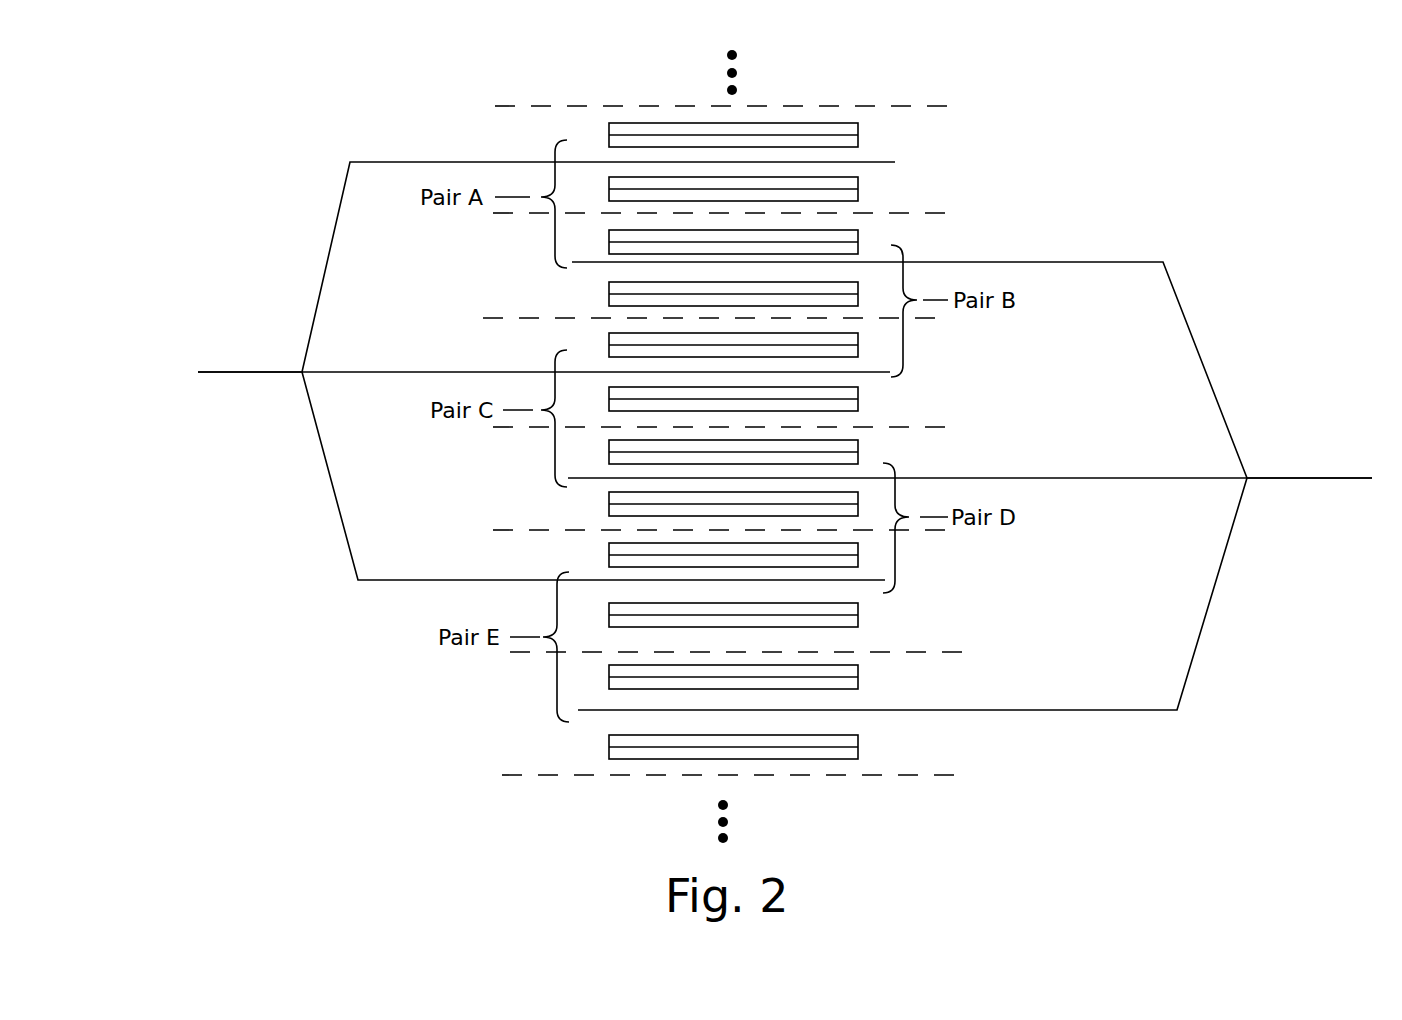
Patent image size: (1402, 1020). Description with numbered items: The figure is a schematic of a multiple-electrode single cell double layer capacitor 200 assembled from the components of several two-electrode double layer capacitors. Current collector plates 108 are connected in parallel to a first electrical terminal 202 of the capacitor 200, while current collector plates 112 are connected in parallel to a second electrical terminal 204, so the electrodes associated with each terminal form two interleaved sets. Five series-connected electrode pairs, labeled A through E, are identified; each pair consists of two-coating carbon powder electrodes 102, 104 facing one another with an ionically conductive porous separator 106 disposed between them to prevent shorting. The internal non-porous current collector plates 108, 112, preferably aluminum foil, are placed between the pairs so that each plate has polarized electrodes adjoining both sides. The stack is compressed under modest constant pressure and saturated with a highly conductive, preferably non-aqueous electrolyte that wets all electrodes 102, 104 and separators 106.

The carbon powder electrode 102 is at (860, 181).
The carbon powder electrode 104 is at (605, 135).
The porous separator 106 is at (580, 106).
The current collector plate 108 is at (445, 162).
The current collector plate 112 is at (1118, 262).
The multiple-electrode single cell double layer capacitor 200 is at (228, 268).
The first electrical terminal 202 is at (258, 372).
The second electrical terminal 204 is at (1300, 478).